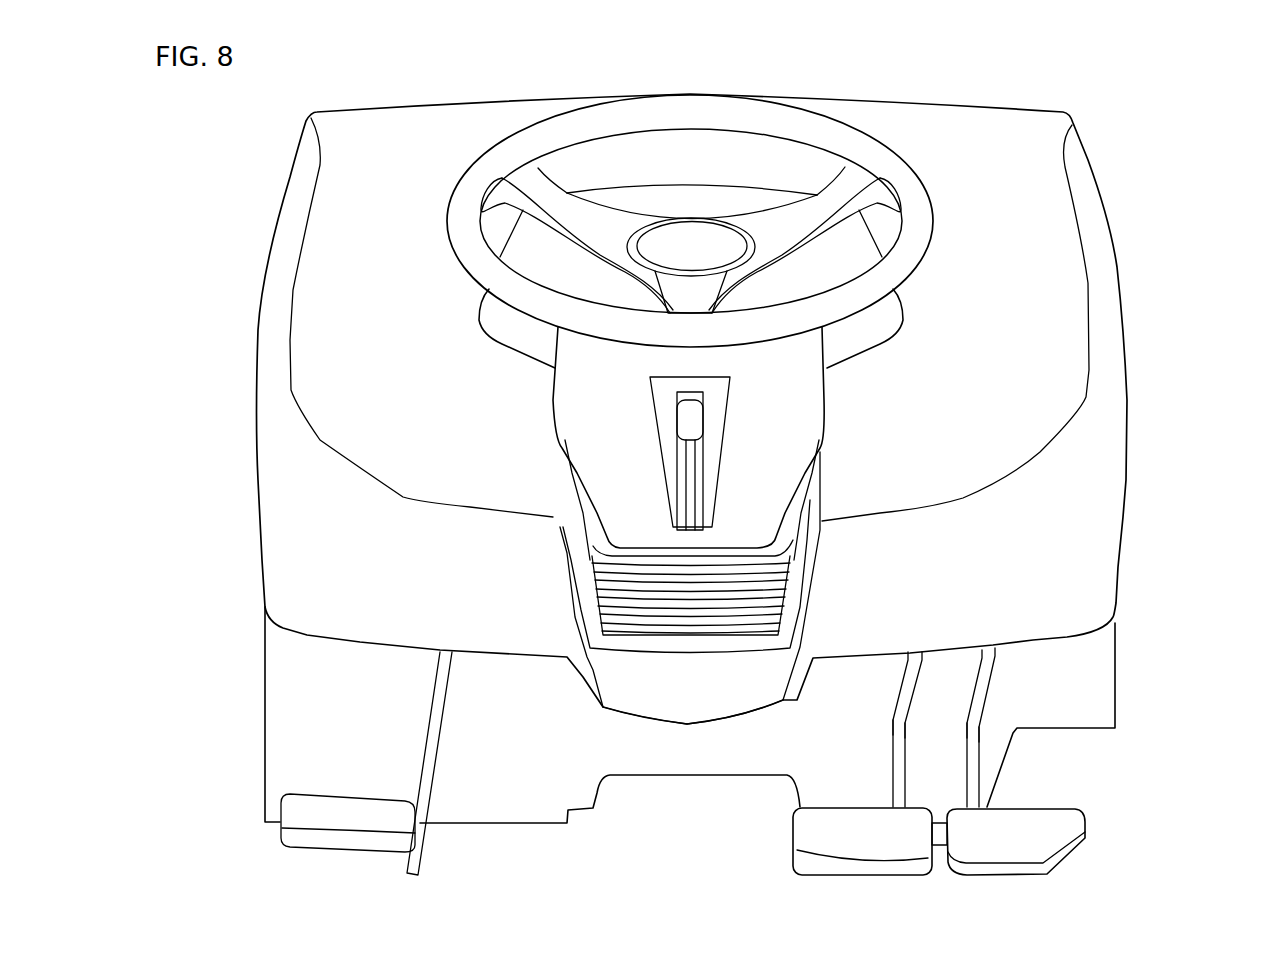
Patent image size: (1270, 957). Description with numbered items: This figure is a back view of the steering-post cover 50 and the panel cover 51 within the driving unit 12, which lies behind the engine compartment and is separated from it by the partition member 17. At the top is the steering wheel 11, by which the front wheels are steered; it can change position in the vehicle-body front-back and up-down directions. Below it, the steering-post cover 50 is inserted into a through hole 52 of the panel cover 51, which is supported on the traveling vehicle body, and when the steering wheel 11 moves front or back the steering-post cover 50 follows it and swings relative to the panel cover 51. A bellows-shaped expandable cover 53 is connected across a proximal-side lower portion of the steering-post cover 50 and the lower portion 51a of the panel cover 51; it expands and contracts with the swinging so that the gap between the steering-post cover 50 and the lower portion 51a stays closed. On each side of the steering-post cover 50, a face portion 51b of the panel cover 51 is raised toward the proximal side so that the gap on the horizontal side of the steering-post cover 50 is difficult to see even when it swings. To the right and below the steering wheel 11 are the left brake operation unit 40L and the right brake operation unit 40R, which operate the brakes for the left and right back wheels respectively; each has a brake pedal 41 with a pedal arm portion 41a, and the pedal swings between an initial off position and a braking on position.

The driving unit 12 is at (214, 197).
The steering wheel 11 is at (933, 212).
The panel cover 51 is at (1125, 318).
The steering-post cover 50 is at (826, 388).
The through hole 52 is at (588, 521).
The face portion 51b is at (818, 515).
The expandable cover 53 is at (655, 632).
The lower portion 51a is at (687, 712).
The partition member 17 is at (1107, 695).
The brake pedal 41 is at (891, 753).
The pedal arm portion 41a is at (893, 725).
The left brake operation unit 40L is at (782, 861).
The right brake operation unit 40R is at (1104, 837).